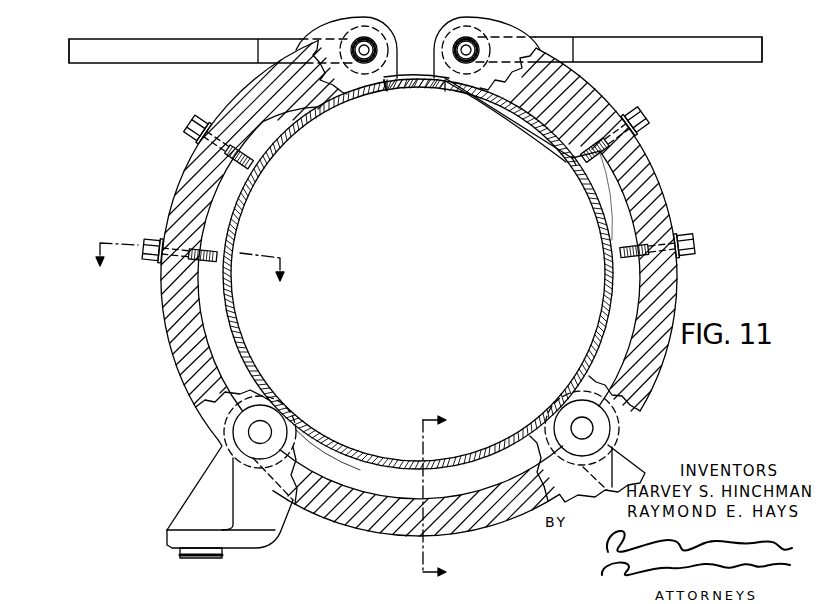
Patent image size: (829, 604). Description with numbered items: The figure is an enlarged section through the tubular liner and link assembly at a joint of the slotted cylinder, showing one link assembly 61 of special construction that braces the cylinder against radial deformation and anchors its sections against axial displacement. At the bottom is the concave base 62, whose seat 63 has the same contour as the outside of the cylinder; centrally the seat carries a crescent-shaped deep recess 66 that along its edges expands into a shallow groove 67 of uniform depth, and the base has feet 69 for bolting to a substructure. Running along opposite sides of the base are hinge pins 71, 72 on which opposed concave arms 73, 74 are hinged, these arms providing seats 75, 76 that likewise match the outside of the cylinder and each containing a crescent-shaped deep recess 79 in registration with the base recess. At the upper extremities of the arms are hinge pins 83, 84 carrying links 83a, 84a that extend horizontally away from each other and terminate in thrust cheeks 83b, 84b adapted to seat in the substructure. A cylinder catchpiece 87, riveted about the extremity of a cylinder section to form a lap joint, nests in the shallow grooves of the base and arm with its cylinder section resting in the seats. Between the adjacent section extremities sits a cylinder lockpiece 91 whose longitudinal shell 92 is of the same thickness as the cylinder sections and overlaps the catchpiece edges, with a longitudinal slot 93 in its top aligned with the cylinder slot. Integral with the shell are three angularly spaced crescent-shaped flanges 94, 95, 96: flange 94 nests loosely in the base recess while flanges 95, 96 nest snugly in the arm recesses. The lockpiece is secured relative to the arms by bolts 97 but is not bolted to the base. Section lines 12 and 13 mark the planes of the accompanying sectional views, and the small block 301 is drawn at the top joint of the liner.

The link assembly 61 is at (648, 367).
The concave base 62 is at (332, 508).
The seat 63 is at (487, 447).
The crescent-shaped deep recess 66 is at (402, 515).
The shallow groove 67 is at (575, 158).
The feet 69 is at (243, 540).
The hinge pin 71 is at (258, 432).
The hinge pin 72 is at (590, 428).
The concave arm 73 is at (220, 360).
The concave arm 74 is at (640, 340).
The seat 75 is at (235, 326).
The seat 76 is at (607, 292).
The crescent-shaped deep recess 79 is at (212, 183).
The hinge pin 83 is at (360, 46).
The hinge pin 84 is at (470, 47).
The link 83a is at (107, 63).
The thrust cheek 83b is at (70, 62).
The link 84a is at (680, 62).
The thrust cheek 84b is at (762, 62).
The cylinder catchpiece 87 is at (530, 122).
The cylinder lockpiece 91 is at (250, 378).
The longitudinal shell 92 is at (378, 462).
The longitudinal slot 93 is at (382, 92).
The crescent-shaped flange 94 is at (436, 482).
The crescent-shaped flange 95 is at (224, 298).
The crescent-shaped flange 96 is at (617, 210).
The bolts 97 is at (214, 122).
The filler block 301 is at (415, 89).
The section line 12- 12 is at (448, 496).
The section line 13- 13 is at (188, 273).